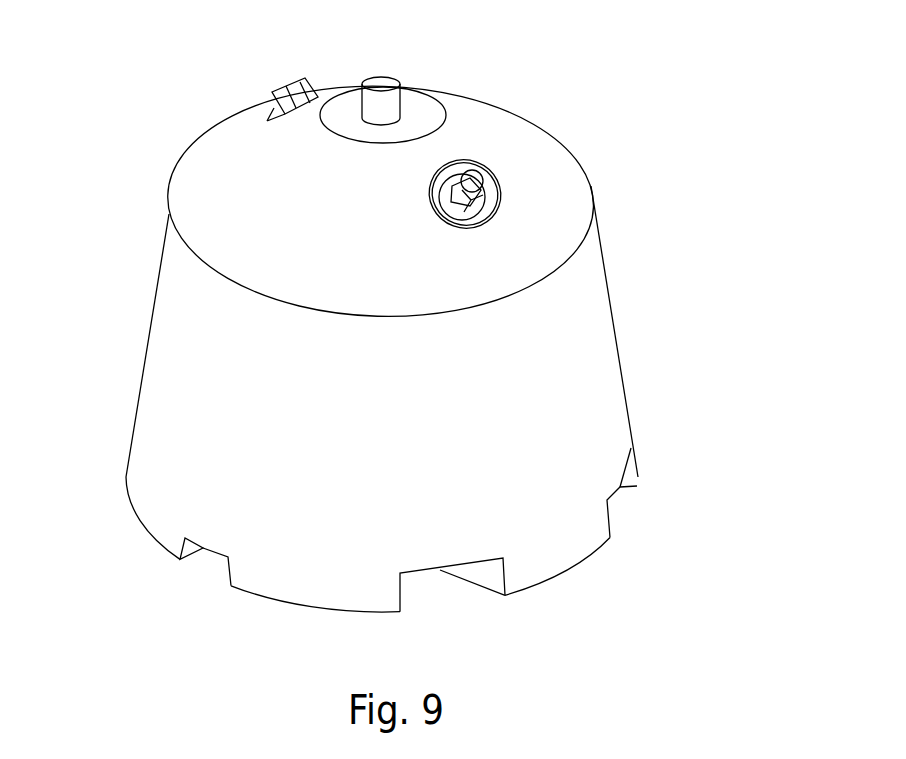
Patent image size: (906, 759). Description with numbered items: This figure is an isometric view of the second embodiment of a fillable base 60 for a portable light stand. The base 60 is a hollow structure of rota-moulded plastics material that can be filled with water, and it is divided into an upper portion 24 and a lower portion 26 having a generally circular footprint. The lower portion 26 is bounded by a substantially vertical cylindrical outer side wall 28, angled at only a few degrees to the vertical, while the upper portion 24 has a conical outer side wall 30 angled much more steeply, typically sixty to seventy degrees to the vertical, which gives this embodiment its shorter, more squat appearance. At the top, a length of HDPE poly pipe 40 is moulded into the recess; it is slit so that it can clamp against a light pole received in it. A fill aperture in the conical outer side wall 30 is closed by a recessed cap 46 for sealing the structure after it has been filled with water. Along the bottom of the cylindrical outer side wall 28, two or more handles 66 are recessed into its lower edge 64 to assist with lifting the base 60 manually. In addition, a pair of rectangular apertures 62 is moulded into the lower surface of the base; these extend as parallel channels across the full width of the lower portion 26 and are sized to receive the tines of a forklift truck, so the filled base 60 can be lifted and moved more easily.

The upper portion 24 is at (206, 133).
The lower portion 26 is at (150, 299).
The substantially vertical cylindrical outer side wall 28 is at (583, 309).
The conical outer side wall 30 is at (553, 177).
The poly pipe 40 is at (380, 78).
The recessed cap 46 is at (275, 86).
The fillable base 60 is at (564, 119).
The rectangular apertures 62 is at (447, 572).
The lower edge 64 is at (581, 564).
The handles 66 is at (207, 553).